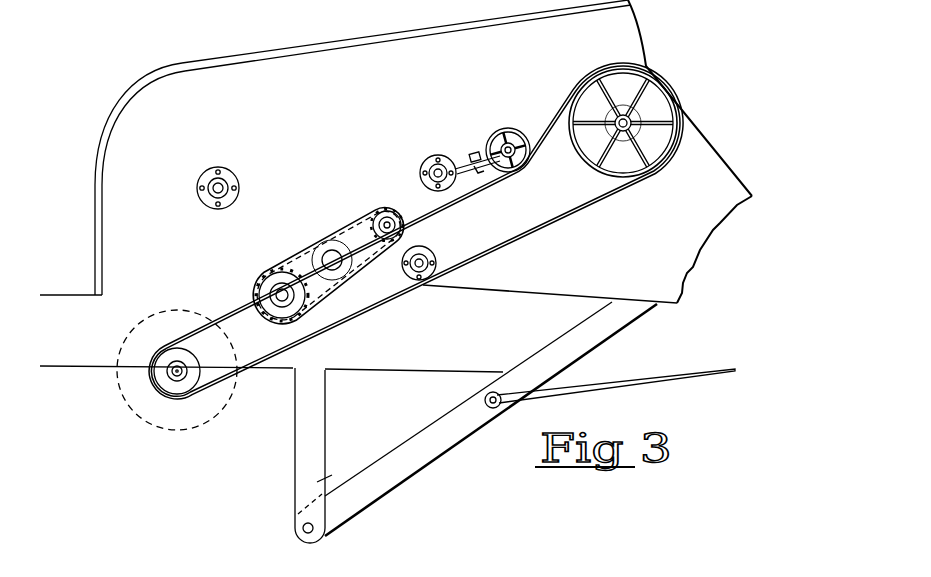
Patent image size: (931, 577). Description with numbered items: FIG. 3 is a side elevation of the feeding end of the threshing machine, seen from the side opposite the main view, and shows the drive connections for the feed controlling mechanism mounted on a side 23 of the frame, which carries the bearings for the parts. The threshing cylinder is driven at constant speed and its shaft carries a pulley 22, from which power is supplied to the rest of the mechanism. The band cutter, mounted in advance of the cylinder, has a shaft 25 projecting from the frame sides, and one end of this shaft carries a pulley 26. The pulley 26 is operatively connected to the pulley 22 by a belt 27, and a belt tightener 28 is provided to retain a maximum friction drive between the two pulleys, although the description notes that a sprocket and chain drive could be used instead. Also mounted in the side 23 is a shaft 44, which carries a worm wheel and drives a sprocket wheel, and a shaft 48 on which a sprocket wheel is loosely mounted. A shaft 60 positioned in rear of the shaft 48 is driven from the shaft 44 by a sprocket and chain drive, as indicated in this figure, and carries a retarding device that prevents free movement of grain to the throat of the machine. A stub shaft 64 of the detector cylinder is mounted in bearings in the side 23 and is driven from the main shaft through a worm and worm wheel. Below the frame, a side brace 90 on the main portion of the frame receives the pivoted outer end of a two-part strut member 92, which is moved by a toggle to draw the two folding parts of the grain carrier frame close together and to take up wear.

The pulley 22 is at (173, 386).
The side of the frame 23 is at (396, 151).
The shaft 25 is at (633, 128).
The pulley 26 is at (669, 88).
The belt 27 is at (567, 108).
The belt tightener 28 is at (459, 160).
The shaft 44 is at (385, 205).
The shaft 48 is at (331, 258).
The shaft 60 is at (268, 291).
The stub shaft 64 is at (200, 189).
The side brace 90 is at (370, 468).
The strut member 92 is at (597, 388).